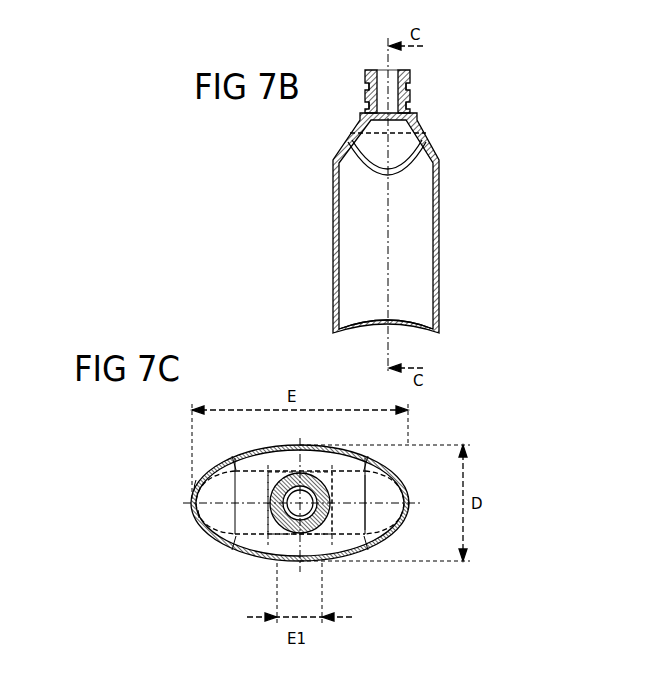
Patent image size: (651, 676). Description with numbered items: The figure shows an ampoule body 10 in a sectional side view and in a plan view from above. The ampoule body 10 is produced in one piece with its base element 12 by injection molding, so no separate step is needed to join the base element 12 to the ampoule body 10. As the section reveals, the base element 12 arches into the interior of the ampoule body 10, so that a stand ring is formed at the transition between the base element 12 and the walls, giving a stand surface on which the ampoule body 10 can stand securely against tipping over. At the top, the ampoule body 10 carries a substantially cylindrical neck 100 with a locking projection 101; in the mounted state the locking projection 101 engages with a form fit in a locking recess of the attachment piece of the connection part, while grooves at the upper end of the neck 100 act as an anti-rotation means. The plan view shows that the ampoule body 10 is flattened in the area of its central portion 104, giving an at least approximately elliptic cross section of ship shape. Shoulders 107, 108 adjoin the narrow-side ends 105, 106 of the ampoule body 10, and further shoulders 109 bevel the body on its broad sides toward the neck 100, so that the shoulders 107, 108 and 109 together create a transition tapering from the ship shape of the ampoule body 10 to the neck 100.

In FIG. 7B, the ampoule body 10 is at (415, 243).
In FIG. 7C, the ampoule body 10 is at (385, 465).
In FIG. 7B, the base element 12 is at (400, 335).
In FIG. 7B, the neck 100 is at (410, 80).
In FIG. 7C, the neck 100 is at (272, 520).
In FIG. 7B, the locking projection 101 is at (410, 95).
In FIG. 7C, the central portion 104 is at (278, 567).
In FIG. 7C, the narrow-side end 105 is at (192, 498).
In FIG. 7C, the narrow-side end 106 is at (410, 503).
In FIG. 7C, the shoulder 107 is at (208, 512).
In FIG. 7B, the shoulder 108 is at (400, 146).
In FIG. 7C, the shoulder 108 is at (380, 518).
In FIG. 7C, the further shoulders 109 is at (335, 462).